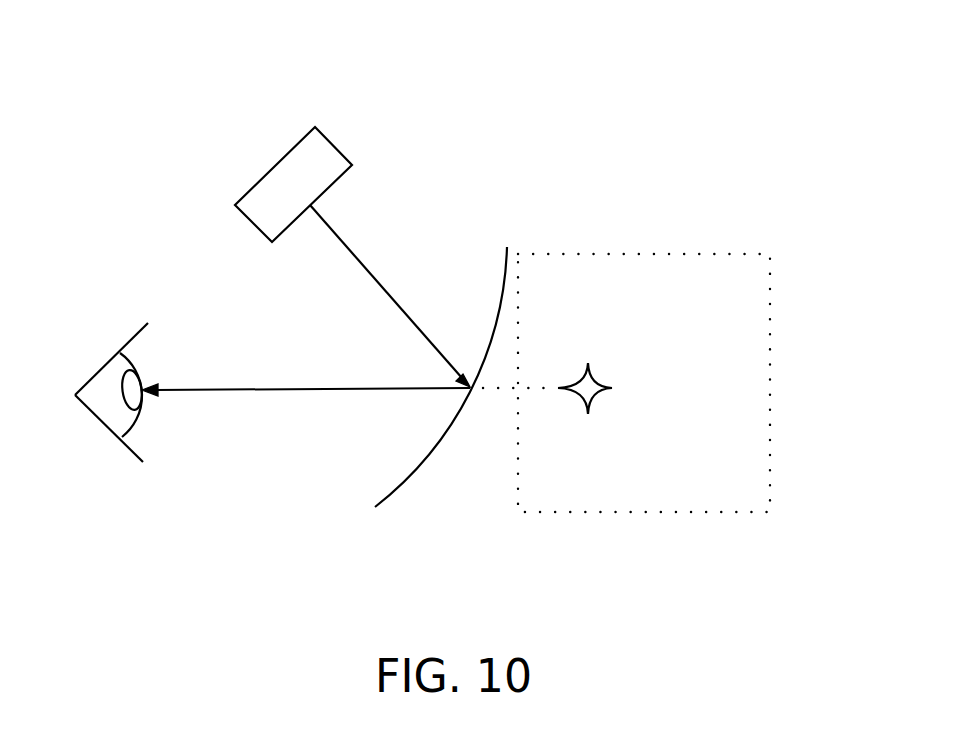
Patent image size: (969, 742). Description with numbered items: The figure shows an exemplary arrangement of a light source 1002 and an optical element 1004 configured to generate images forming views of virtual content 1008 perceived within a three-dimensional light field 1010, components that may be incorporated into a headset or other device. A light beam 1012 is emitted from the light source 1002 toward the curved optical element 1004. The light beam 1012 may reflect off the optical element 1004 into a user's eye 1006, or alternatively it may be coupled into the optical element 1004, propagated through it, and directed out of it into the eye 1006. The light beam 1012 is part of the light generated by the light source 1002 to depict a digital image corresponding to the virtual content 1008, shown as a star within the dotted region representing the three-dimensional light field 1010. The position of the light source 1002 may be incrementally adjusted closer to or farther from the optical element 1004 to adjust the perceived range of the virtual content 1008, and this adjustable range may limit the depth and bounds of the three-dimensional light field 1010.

The light source 1002 is at (328, 138).
The optical element 1004 is at (432, 455).
The user's eye 1006 is at (133, 380).
The virtual content 1008 is at (588, 365).
The three-dimensional light field 1010 is at (613, 255).
The light beam 1012 is at (353, 247).